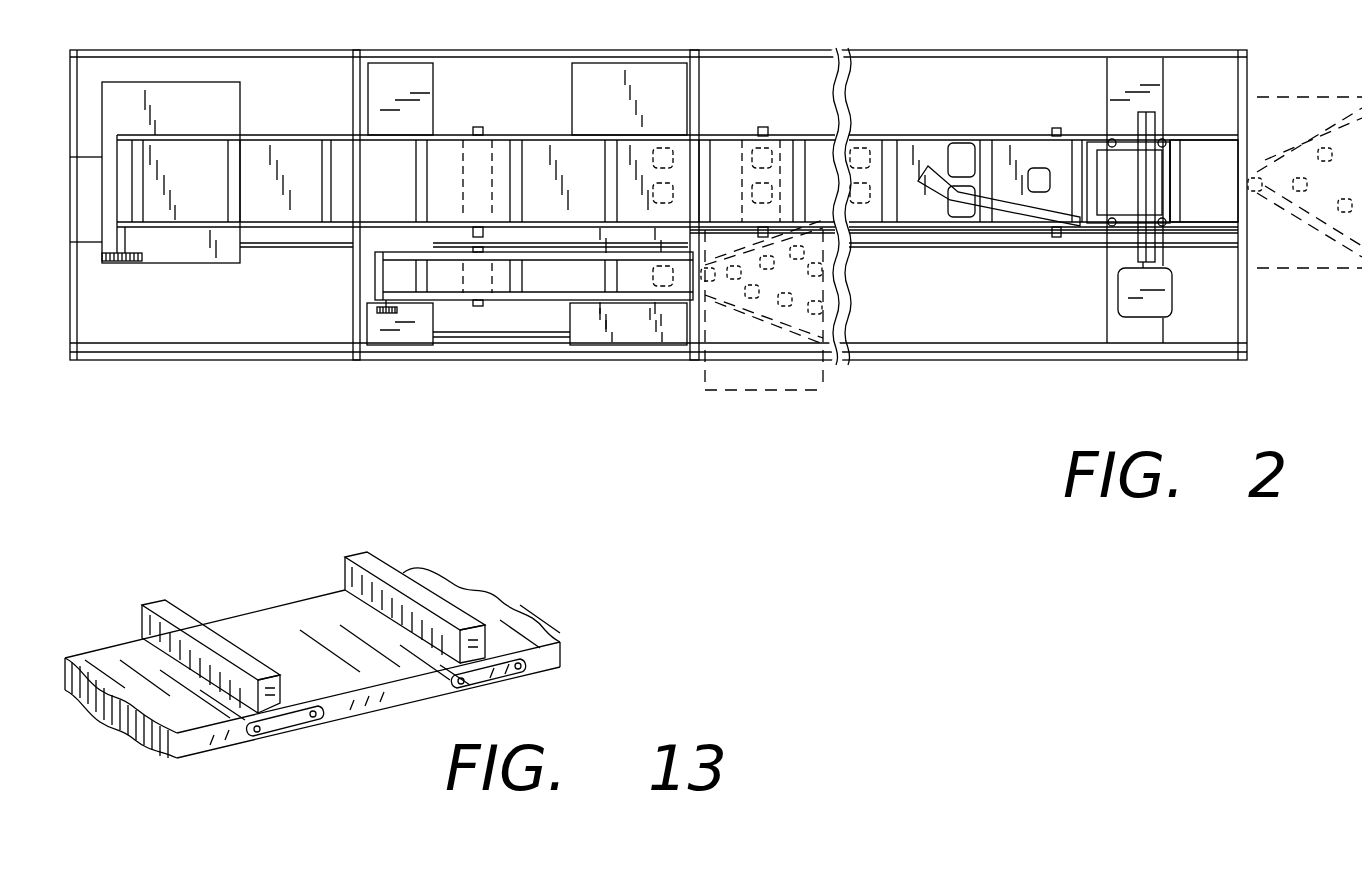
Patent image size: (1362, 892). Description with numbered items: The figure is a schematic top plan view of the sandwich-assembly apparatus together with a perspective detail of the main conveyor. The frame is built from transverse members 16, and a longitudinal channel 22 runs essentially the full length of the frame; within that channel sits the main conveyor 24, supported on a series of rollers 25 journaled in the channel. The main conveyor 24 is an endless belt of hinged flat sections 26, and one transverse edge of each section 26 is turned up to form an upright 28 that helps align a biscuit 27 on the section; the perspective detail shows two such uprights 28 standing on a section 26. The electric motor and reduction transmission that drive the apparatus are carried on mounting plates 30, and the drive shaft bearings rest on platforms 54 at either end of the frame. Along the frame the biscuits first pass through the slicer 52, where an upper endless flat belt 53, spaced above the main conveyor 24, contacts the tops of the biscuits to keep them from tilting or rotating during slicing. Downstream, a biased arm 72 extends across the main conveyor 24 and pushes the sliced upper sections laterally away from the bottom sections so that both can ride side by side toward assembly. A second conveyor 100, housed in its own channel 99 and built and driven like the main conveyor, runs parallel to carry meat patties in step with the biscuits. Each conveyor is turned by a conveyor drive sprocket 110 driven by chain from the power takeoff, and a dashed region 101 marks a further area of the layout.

In FIG. 2, the transverse members 16 is at (353, 72).
In FIG. 2, the longitudinal channel 22 is at (725, 137).
In FIG. 2, the main conveyor 24 is at (392, 176).
In FIG. 2, the rollers 25 is at (485, 155).
In FIG. 2, the flat sections 26 is at (300, 147).
In FIG. 13, the flat sections 26 is at (360, 638).
In FIG. 2, the biscuit 27 is at (1035, 172).
In FIG. 2, the upright 28 is at (413, 193).
In FIG. 13, the upright 28 is at (350, 574).
In FIG. 2, the mounting plate 30 is at (405, 345).
In FIG. 2, the slicer 52 is at (1150, 112).
In FIG. 2, the upper endless flat belt 53 is at (1228, 193).
In FIG. 2, the platforms 54 is at (180, 88).
In FIG. 2, the biased arm 72 is at (1000, 225).
In FIG. 2, the channel 99 is at (515, 300).
In FIG. 2, the second conveyor 100 is at (570, 272).
In FIG. 2, the discharge fan area 101 is at (845, 313).
In FIG. 2, the conveyor drive sprocket 110 is at (113, 262).